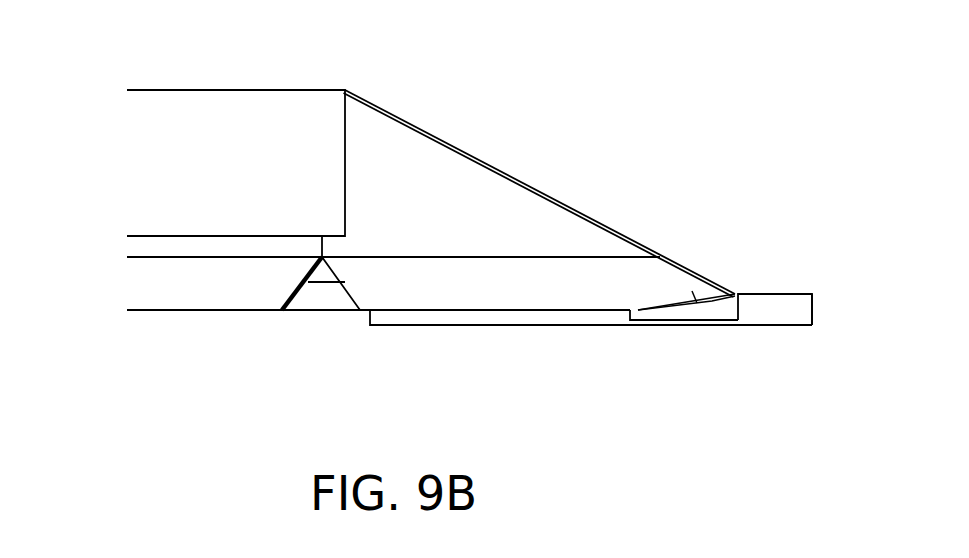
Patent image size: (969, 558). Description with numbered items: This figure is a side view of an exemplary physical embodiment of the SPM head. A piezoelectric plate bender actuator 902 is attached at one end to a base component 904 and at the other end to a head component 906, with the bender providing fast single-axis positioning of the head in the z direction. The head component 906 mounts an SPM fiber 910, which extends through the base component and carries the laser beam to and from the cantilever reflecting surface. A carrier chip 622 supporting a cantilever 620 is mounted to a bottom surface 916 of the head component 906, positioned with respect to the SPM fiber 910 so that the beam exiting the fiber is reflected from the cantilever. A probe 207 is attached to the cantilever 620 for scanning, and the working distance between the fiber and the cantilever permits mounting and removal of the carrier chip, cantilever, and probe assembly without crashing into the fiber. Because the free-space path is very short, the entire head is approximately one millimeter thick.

The piezoelectric plate bender actuator 902 is at (208, 142).
The base component 904 is at (191, 293).
The head component 906 is at (513, 185).
The SPM fiber 910 is at (722, 290).
The carrier chip 622 is at (457, 316).
The cantilever 620 is at (675, 322).
The probe 207 is at (738, 326).
The bottom surface 916 is at (817, 307).